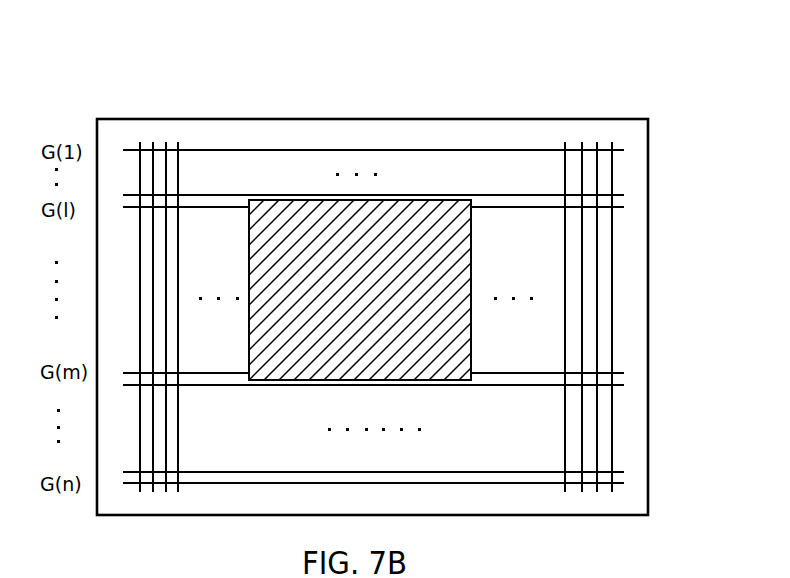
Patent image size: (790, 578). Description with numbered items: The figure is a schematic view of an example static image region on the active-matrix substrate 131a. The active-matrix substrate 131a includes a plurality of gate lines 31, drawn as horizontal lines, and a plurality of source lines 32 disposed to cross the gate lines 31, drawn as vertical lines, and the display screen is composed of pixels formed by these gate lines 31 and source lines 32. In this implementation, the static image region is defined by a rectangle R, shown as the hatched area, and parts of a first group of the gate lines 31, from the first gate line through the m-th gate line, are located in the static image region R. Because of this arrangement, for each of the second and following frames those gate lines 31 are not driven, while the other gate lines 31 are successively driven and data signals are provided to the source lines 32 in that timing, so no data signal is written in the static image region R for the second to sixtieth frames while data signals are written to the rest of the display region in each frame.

The gate lines 31 is at (228, 150).
The source lines 32 is at (612, 330).
The active-matrix substrate 131a is at (648, 119).
The static image region R is at (430, 199).